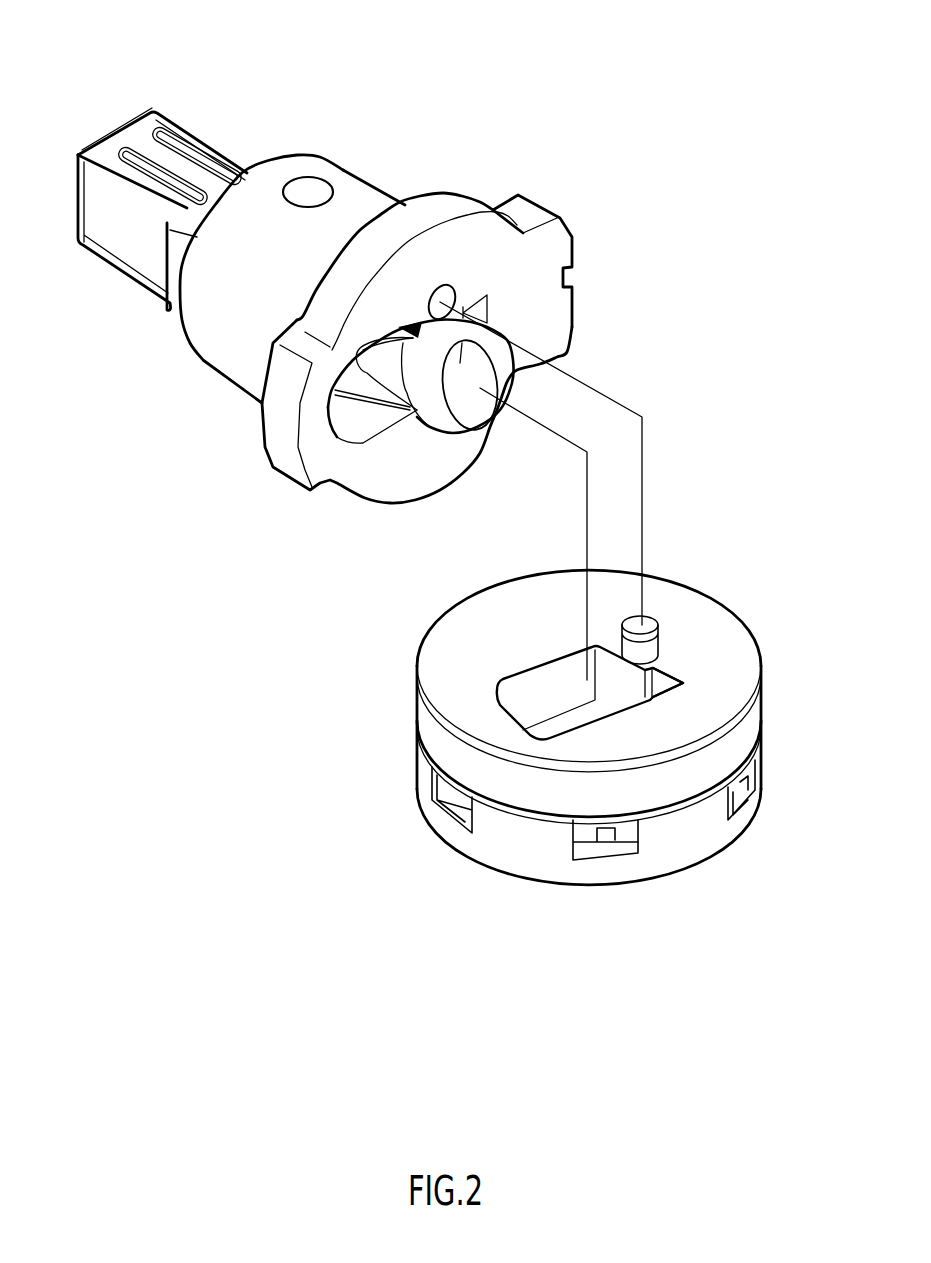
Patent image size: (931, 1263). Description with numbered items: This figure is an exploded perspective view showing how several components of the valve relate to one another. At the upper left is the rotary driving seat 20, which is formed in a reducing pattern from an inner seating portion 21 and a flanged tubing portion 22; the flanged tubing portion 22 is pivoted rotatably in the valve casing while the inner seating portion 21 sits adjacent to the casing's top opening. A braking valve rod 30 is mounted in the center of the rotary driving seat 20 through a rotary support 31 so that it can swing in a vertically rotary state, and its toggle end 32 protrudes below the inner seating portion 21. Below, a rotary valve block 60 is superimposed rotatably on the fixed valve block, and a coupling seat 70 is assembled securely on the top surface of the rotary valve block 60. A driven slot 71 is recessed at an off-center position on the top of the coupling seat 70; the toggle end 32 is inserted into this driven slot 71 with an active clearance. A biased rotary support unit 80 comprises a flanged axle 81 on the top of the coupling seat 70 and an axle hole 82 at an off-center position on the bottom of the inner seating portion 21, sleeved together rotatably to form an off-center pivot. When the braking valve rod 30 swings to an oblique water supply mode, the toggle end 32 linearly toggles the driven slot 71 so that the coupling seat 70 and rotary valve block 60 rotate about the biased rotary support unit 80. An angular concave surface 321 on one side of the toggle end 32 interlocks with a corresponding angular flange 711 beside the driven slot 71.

The rotary driving seat 20 is at (316, 335).
The inner seating portion 21 is at (293, 440).
The flanged tubing portion 22 is at (243, 340).
The braking valve rod 30 is at (203, 122).
The rotary support 31 is at (320, 188).
The toggle end 32 is at (450, 405).
The angular concave surface 321 is at (480, 388).
The rotary valve block 60 is at (423, 782).
The coupling seat 70 is at (587, 679).
The driven slot 71 is at (593, 718).
The angular flange 711 is at (647, 667).
The biased rotary support unit 80 is at (587, 480).
The flanged axle 81 is at (657, 637).
The axle hole 82 is at (403, 322).